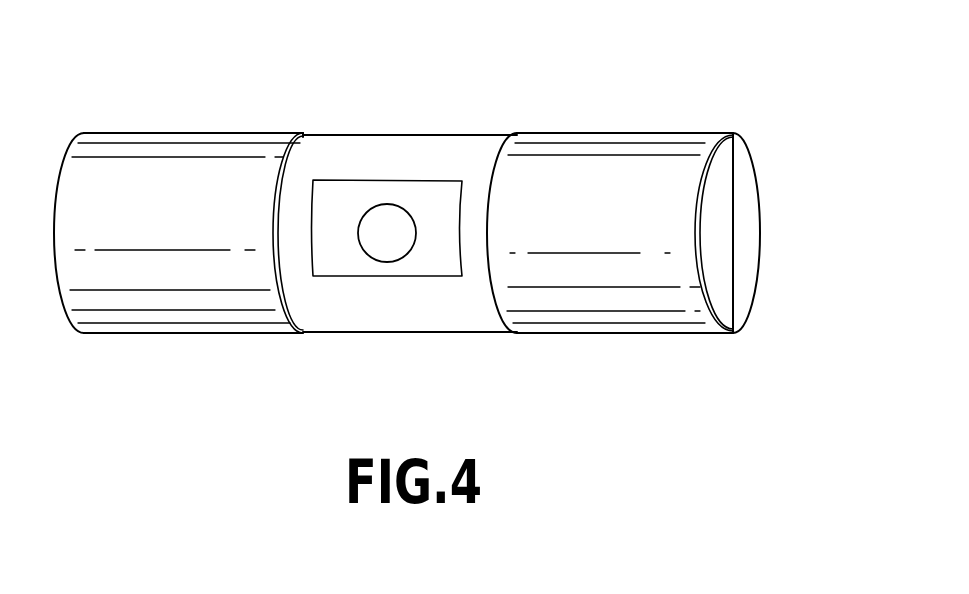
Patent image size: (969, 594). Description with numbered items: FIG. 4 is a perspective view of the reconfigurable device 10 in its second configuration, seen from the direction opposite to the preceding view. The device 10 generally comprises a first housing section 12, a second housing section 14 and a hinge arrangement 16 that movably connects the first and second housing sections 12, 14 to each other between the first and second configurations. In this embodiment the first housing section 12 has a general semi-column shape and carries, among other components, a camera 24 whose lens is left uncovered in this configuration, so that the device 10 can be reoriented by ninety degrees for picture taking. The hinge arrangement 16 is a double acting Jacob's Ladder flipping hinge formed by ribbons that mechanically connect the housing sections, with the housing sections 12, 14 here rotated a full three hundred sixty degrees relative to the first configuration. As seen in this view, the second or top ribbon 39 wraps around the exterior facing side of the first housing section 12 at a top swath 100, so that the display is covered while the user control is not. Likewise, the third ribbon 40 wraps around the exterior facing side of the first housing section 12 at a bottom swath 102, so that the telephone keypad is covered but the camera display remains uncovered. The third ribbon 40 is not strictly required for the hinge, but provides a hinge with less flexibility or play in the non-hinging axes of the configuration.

The device 10 is at (541, 402).
The first housing section 12 is at (716, 200).
The second housing section 14 is at (747, 268).
The hinge arrangement 16 is at (194, 133).
The camera 24 is at (390, 216).
The second ribbon 39 is at (600, 312).
The third ribbon 40 is at (222, 305).
The top swath 100 is at (737, 88).
The bottom swath 102 is at (293, 87).